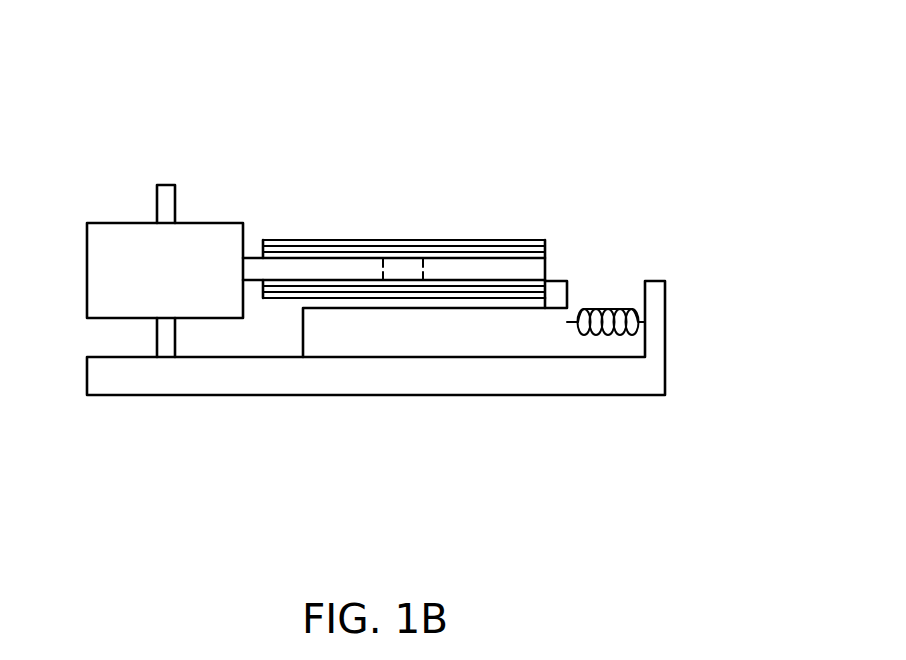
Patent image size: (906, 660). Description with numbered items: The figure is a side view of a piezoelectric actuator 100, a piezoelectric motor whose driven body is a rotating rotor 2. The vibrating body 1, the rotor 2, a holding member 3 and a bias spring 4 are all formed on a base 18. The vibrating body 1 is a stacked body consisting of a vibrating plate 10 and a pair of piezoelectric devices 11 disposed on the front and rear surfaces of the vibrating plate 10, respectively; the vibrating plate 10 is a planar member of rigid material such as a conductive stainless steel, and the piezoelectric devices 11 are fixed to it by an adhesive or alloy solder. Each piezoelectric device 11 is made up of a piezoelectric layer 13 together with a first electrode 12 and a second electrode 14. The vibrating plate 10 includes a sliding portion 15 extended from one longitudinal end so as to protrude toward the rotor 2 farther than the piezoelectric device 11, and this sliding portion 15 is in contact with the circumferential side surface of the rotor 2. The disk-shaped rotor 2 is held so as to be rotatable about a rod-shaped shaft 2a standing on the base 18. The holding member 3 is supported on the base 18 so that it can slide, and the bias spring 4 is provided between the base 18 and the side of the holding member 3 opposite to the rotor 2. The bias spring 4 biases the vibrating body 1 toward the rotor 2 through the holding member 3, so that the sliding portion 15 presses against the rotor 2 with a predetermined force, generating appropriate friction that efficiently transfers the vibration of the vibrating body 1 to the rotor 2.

The piezoelectric actuator 100 is at (700, 77).
The vibrating body 1 is at (546, 146).
The rotor 2 is at (208, 233).
The shaft 2a is at (160, 208).
The holding member 3 is at (382, 345).
The bias spring 4 is at (613, 308).
The vibrating plate 10 is at (500, 270).
The piezoelectric device 11 is at (612, 145).
The first electrode 12 is at (547, 255).
The piezoelectric layer 13 is at (547, 249).
The second electrode 14 is at (547, 243).
The sliding portion 15 is at (258, 258).
The base 18 is at (652, 378).